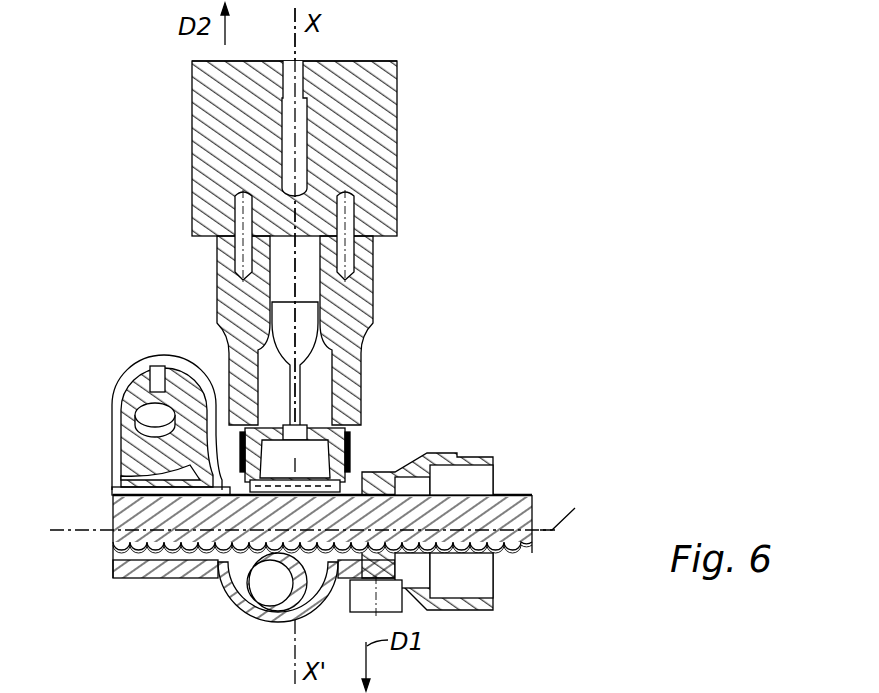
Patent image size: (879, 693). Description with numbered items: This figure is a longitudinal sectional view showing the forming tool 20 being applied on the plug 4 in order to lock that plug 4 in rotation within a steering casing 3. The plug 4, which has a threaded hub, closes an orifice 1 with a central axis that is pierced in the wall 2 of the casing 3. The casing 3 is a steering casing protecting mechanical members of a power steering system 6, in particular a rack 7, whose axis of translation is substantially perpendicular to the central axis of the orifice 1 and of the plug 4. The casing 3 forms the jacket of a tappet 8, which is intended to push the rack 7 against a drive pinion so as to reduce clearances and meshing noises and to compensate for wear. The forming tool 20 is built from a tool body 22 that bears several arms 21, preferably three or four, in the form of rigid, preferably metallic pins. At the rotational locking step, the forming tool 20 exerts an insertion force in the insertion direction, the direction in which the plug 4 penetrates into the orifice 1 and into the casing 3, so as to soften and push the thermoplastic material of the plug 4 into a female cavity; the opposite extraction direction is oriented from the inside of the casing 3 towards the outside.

The orifice 1 is at (336, 432).
The wall 2 is at (353, 450).
The casing 3 is at (336, 448).
The plug 4 is at (272, 430).
The power steering system 6 is at (116, 354).
The rack 7 is at (130, 516).
The tappet 8 is at (368, 467).
The forming tool 20 is at (364, 156).
The arms 21 is at (287, 255).
The tool body 22 is at (205, 86).